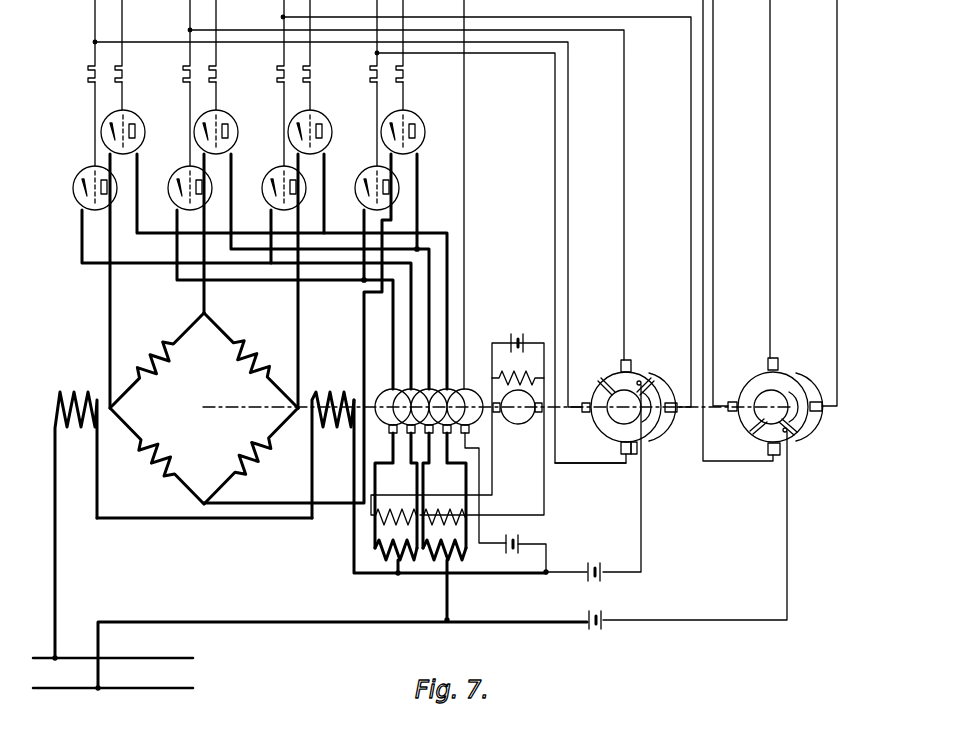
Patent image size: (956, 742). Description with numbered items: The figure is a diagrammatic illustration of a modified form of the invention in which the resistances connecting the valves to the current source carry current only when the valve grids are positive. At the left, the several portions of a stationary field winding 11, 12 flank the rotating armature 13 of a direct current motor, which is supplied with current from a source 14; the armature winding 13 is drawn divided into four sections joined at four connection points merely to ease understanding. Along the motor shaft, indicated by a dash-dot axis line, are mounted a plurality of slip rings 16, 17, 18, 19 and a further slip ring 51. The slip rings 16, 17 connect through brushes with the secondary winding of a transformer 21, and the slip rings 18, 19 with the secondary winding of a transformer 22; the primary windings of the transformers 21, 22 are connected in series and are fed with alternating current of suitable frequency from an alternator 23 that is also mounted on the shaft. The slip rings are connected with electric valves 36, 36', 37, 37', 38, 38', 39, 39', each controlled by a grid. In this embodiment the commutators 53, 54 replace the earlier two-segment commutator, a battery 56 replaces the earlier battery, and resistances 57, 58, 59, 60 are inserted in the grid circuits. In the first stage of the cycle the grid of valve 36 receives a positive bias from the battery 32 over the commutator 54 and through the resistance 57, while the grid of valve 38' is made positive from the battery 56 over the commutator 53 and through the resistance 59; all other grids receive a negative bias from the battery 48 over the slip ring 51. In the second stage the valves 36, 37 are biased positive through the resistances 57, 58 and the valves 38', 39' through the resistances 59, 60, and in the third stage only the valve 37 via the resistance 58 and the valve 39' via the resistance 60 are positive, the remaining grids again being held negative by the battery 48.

The field winding portion 11 is at (67, 430).
The field winding portion 12 is at (323, 430).
The rotating armature 13 is at (212, 382).
The source of current 14 is at (199, 656).
The slip ring 16 is at (392, 388).
The slip ring 17 is at (410, 388).
The slip ring 18 is at (428, 388).
The slip ring 19 is at (446, 388).
The slip ring 51 is at (464, 388).
The transformer 21 is at (376, 528).
The transformer 22 is at (455, 533).
The alternator 23 is at (494, 387).
The battery 32 is at (601, 616).
The electric valve 36 is at (419, 131).
The electric valve 36' is at (402, 183).
The electric valve 37 is at (328, 131).
The electric valve 37' is at (309, 183).
The electric valve 38 is at (233, 131).
The electric valve 38' is at (214, 183).
The electric valve 39 is at (140, 131).
The electric valve 39' is at (120, 183).
The battery 48 is at (520, 540).
The commutator 53 is at (652, 432).
The commutator 54 is at (806, 423).
The battery 56 is at (600, 568).
The resistance 57 is at (416, 69).
The resistance 58 is at (323, 69).
The resistance 59 is at (229, 69).
The resistance 60 is at (135, 69).